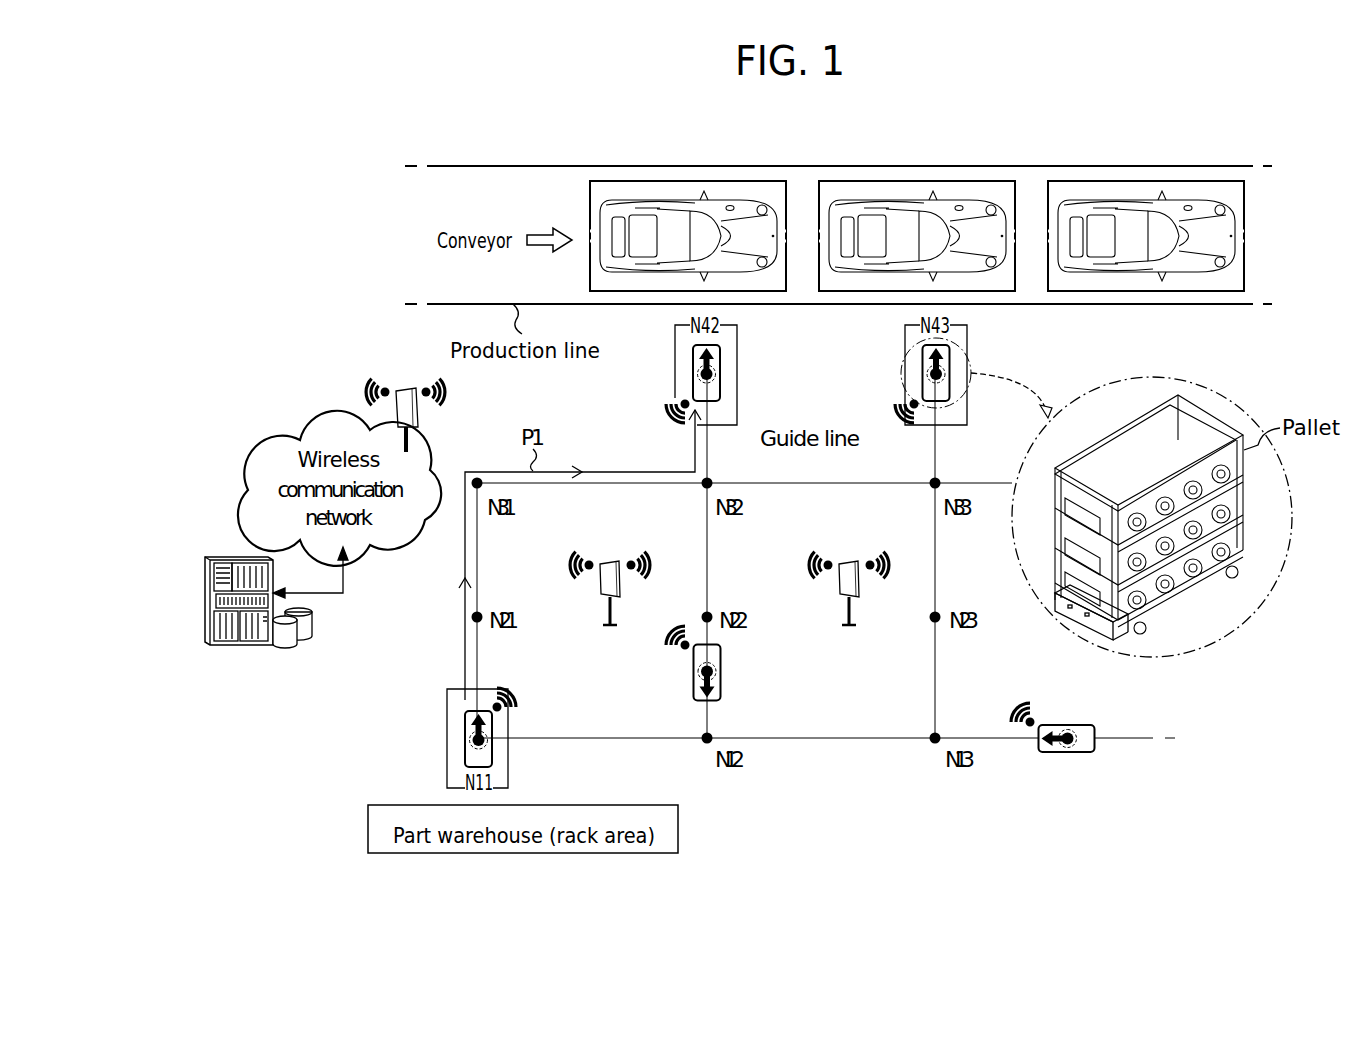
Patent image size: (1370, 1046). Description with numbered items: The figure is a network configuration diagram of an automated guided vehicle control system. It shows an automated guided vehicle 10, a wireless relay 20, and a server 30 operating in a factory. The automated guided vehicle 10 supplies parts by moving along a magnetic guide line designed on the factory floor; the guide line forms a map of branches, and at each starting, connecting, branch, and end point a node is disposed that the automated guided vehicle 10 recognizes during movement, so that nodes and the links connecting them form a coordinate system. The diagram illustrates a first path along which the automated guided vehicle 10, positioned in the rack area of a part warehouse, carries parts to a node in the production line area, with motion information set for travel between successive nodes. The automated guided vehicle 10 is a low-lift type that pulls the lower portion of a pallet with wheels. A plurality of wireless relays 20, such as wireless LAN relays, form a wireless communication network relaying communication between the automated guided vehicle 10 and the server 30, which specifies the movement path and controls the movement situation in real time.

The automated guided vehicle 10 is at (693, 368).
The wireless relay 20 is at (405, 390).
The server 30 is at (205, 573).